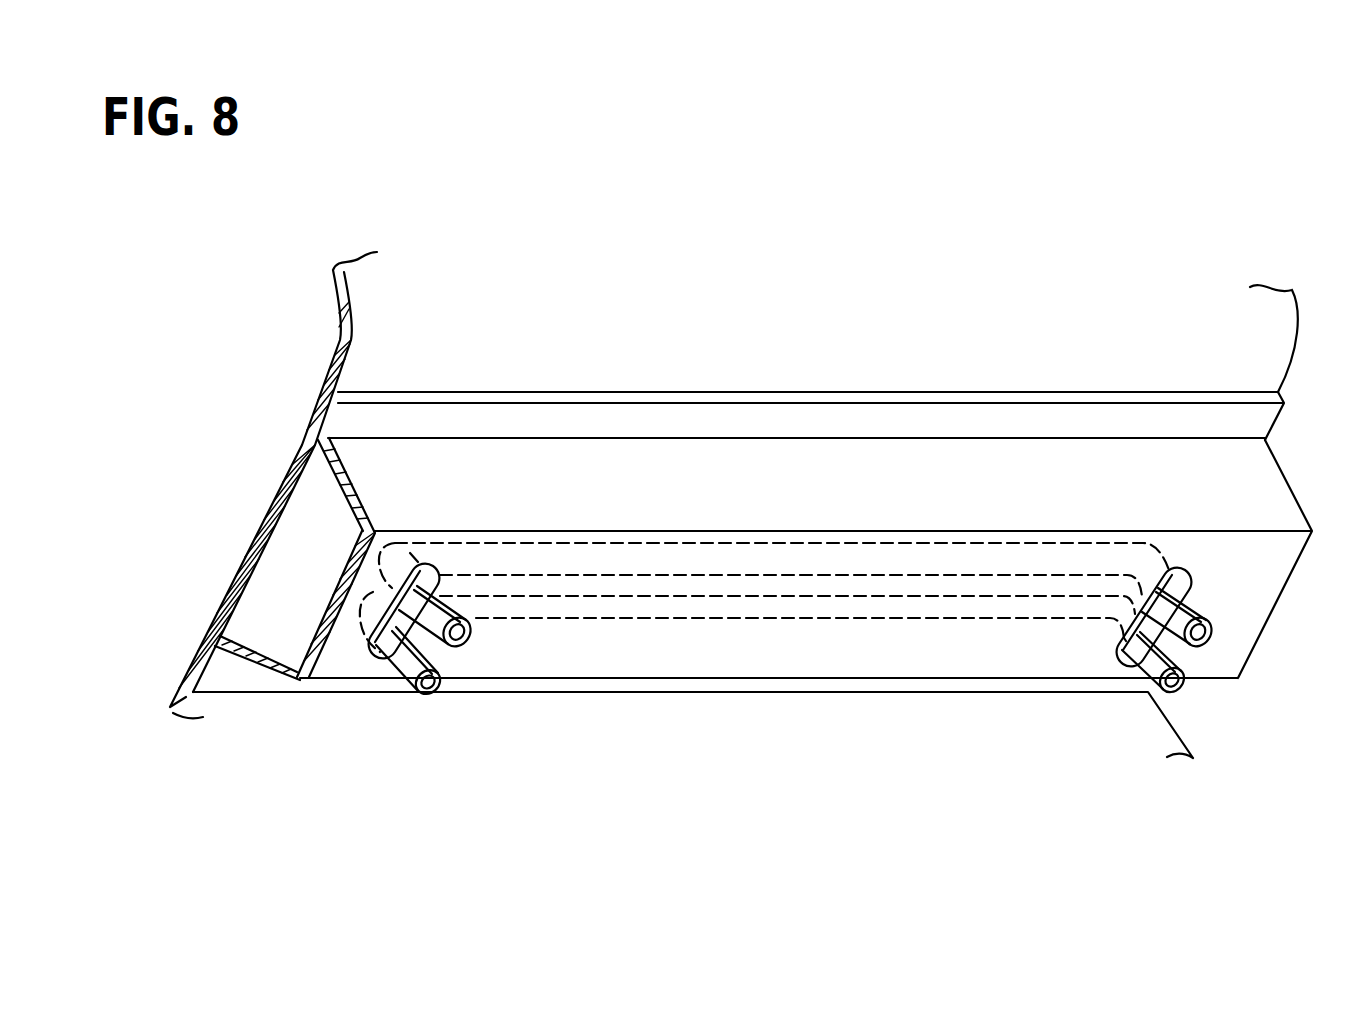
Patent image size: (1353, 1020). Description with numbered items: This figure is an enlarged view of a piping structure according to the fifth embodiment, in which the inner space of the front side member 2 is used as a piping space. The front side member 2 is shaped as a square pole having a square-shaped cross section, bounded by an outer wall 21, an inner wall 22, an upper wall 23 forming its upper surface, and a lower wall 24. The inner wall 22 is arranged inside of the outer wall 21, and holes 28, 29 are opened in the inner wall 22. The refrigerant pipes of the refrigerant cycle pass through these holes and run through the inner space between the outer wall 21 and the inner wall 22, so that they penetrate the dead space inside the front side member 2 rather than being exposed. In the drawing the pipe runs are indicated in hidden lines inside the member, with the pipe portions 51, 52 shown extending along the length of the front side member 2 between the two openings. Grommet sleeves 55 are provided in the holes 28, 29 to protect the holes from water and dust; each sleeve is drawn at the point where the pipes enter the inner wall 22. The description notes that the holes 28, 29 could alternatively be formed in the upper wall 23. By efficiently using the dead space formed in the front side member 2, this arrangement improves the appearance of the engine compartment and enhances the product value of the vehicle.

The front side member 2 is at (729, 461).
The outer wall 21 is at (297, 515).
The inner wall 22 is at (342, 660).
The upper wall 23 is at (443, 470).
The lower wall 24 is at (260, 660).
The hole 28 is at (1118, 652).
The hole 29 is at (368, 663).
The electric wires 51 is at (788, 614).
The electric wires 52 is at (908, 563).
The grommet sleeve 55 is at (1123, 647).